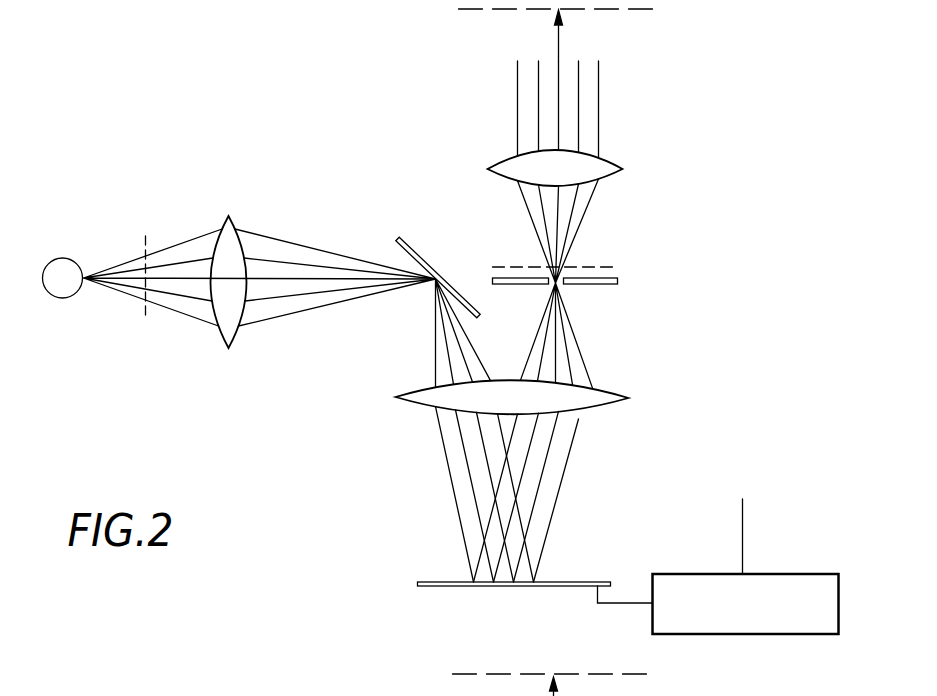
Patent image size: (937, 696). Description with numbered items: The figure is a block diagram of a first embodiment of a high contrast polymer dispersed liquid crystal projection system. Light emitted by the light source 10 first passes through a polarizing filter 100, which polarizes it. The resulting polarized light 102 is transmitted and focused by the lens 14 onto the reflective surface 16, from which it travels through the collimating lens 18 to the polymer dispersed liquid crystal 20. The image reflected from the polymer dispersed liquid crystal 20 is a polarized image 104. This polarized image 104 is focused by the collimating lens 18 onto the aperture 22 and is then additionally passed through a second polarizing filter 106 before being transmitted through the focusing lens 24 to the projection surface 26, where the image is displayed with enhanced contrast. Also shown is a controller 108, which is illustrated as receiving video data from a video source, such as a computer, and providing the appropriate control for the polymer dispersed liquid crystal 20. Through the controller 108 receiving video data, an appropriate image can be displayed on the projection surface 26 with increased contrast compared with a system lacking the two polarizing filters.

The light source 10 is at (58, 257).
The lens 14 is at (233, 343).
The reflective surface 16 is at (415, 252).
The collimating lens 18 is at (623, 393).
The polymer dispersed liquid crystal 20 is at (435, 578).
The aperture 22 is at (612, 285).
The focusing lens 24 is at (616, 160).
The projection surface 26 is at (642, 9).
The polarizing filter 100 is at (143, 311).
The polarized light 102 is at (185, 237).
The polarized image 104 is at (567, 477).
The second polarizing filter 106 is at (613, 265).
The controller 108 is at (795, 635).